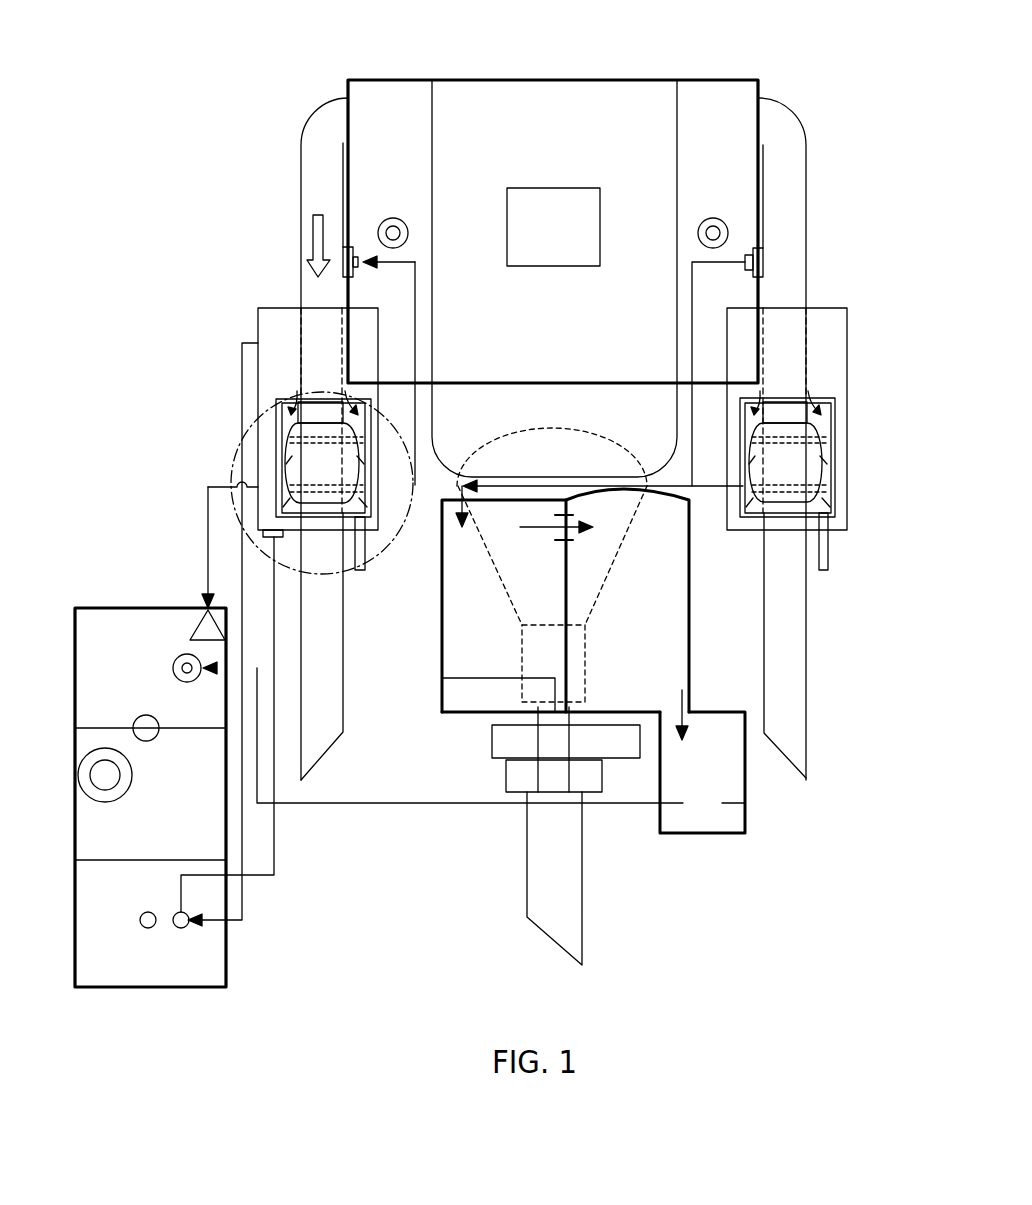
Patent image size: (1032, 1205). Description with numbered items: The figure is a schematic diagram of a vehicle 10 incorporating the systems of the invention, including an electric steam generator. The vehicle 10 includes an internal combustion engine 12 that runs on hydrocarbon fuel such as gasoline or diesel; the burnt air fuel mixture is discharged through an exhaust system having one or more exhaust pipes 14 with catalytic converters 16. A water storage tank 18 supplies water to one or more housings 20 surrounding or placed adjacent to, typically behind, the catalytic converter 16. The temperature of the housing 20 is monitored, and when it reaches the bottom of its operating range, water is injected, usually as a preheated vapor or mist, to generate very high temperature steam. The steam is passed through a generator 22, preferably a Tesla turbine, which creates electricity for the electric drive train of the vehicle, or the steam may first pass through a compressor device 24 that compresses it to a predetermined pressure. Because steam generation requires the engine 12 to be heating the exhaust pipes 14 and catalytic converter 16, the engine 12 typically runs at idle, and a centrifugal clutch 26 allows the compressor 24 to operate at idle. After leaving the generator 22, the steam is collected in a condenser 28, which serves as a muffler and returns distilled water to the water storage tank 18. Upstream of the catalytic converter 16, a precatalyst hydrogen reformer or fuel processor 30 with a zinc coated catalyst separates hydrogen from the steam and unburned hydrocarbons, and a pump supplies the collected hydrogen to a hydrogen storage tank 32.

The vehicle 10 is at (822, 75).
The internal combustion engine 12 is at (582, 147).
The exhaust pipes 14 is at (541, 439).
The catalytic converter 16 is at (518, 515).
The water storage tank 18 is at (70, 693).
The housing 20 is at (542, 457).
The generator 22 is at (601, 688).
The compressor device 24 is at (541, 687).
The centrifugal clutch 26 is at (598, 842).
The condenser 28 is at (724, 807).
The fuel processor 30 is at (541, 428).
The hydrogen storage tank 32 is at (181, 973).